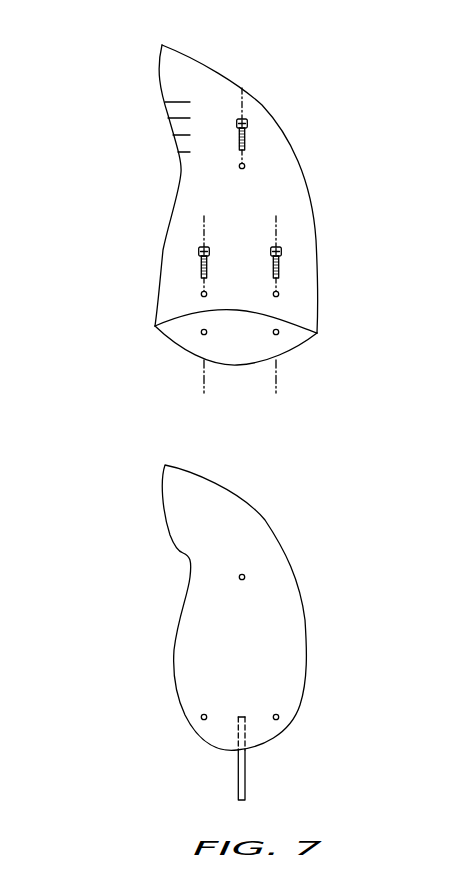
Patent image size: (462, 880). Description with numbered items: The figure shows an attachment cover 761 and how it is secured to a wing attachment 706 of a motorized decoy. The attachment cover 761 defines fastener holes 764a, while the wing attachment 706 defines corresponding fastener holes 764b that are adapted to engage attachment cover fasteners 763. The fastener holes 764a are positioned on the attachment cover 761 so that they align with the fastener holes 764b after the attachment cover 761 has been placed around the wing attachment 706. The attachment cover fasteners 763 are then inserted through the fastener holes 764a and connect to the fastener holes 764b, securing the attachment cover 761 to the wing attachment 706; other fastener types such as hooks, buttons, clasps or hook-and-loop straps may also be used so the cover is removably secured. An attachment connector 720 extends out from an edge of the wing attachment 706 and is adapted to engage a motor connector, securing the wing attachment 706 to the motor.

The attachment cover 761 is at (273, 145).
The attachment cover fasteners 763 is at (237, 132).
The fastener holes 764a is at (245, 166).
The wing attachment 706 is at (272, 637).
The fastener holes 764b is at (241, 580).
The attachment connector 720 is at (238, 777).